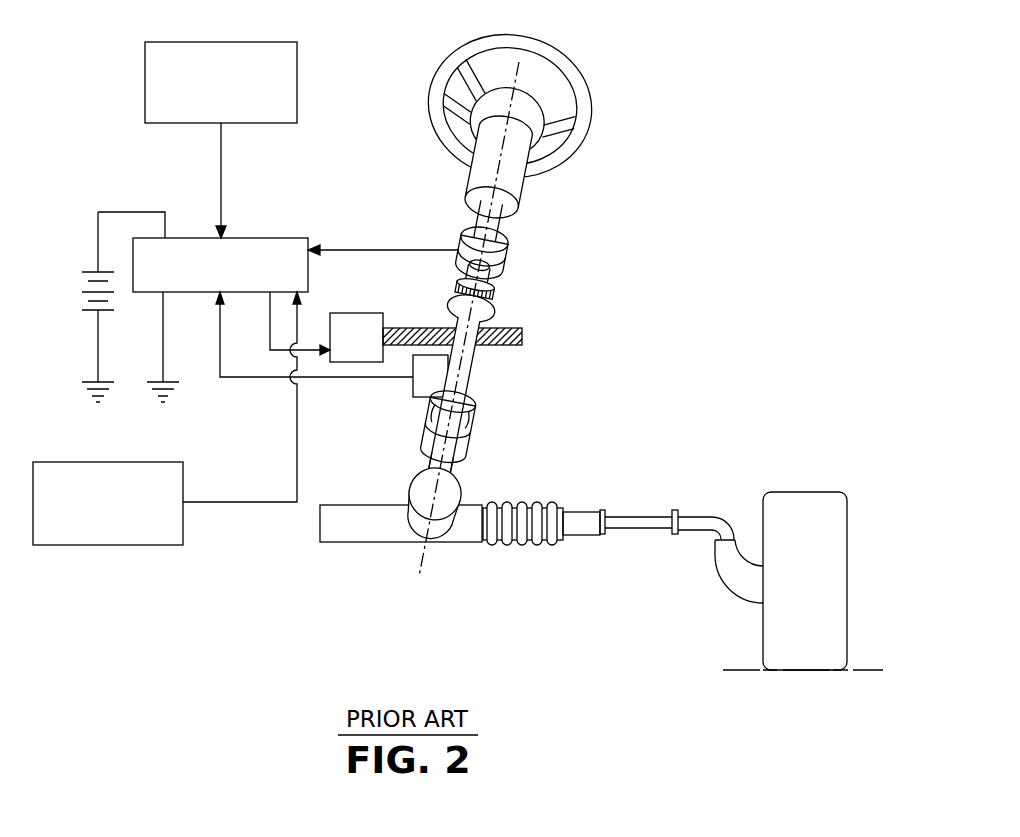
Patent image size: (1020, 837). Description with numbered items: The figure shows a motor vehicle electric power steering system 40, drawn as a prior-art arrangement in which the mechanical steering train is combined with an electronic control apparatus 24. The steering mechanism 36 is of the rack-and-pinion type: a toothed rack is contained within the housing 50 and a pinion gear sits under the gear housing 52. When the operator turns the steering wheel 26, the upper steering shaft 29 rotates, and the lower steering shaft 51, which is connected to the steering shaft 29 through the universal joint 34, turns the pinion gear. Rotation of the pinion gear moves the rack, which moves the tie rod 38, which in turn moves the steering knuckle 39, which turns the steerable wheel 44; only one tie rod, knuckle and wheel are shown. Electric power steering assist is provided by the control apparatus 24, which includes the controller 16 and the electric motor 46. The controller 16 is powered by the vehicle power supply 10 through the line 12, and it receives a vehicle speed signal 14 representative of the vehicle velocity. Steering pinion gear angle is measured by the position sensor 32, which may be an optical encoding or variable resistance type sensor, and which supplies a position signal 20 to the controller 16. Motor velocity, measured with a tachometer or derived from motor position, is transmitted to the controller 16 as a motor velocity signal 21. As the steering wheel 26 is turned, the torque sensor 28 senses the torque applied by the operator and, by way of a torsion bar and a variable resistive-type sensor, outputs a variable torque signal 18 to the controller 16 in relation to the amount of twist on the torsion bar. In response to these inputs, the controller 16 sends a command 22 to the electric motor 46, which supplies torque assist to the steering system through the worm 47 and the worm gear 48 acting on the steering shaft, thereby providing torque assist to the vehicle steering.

The vehicle power supply 10 is at (82, 287).
The line 12 is at (118, 212).
The vehicle speed signal 14 is at (221, 197).
The controller 16 is at (180, 238).
The torque signal 18 is at (390, 250).
The position signal 20 is at (280, 377).
The motor velocity signal 21 is at (300, 315).
The command 22 is at (270, 352).
The control apparatus 24 is at (672, 230).
The steering wheel 26 is at (560, 62).
The torque sensor 28 is at (500, 250).
The steering shaft 29 is at (498, 207).
The position sensor 32 is at (408, 387).
The universal joint 34 is at (470, 417).
The steering mechanism 36 is at (549, 495).
The tie rod 38 is at (635, 523).
The steering knuckle 39 is at (735, 577).
The electric power steering system 40 is at (765, 330).
The steerable wheel 44 is at (823, 498).
The electric motor 46 is at (377, 313).
The worm 47 is at (521, 329).
The worm gear 48 is at (490, 293).
The housing 50 is at (338, 532).
The lower steering shaft 51 is at (452, 462).
The gear housing 52 is at (417, 485).